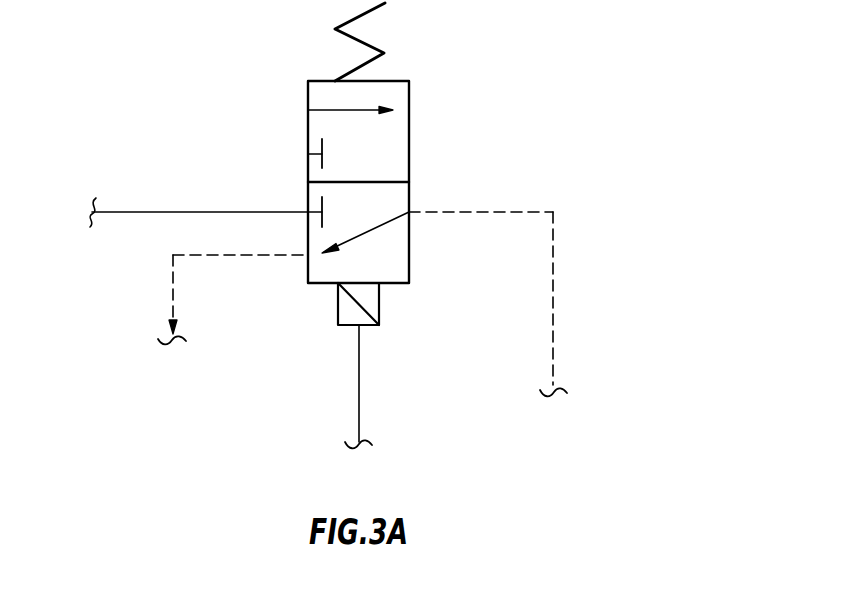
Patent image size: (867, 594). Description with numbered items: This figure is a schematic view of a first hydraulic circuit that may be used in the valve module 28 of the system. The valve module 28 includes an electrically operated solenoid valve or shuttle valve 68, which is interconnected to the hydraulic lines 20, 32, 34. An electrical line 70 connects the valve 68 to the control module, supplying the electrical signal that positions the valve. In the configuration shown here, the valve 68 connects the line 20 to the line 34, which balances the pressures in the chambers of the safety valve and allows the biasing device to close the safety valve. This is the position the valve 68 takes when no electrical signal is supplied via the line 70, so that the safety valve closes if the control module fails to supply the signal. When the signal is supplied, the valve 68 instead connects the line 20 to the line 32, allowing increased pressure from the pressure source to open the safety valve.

The valve module 28 is at (616, 106).
The line 32 is at (138, 212).
The line 34 is at (173, 282).
The line 20 is at (553, 262).
The solenoid valve 68 is at (397, 284).
The electrical line 70 is at (359, 404).